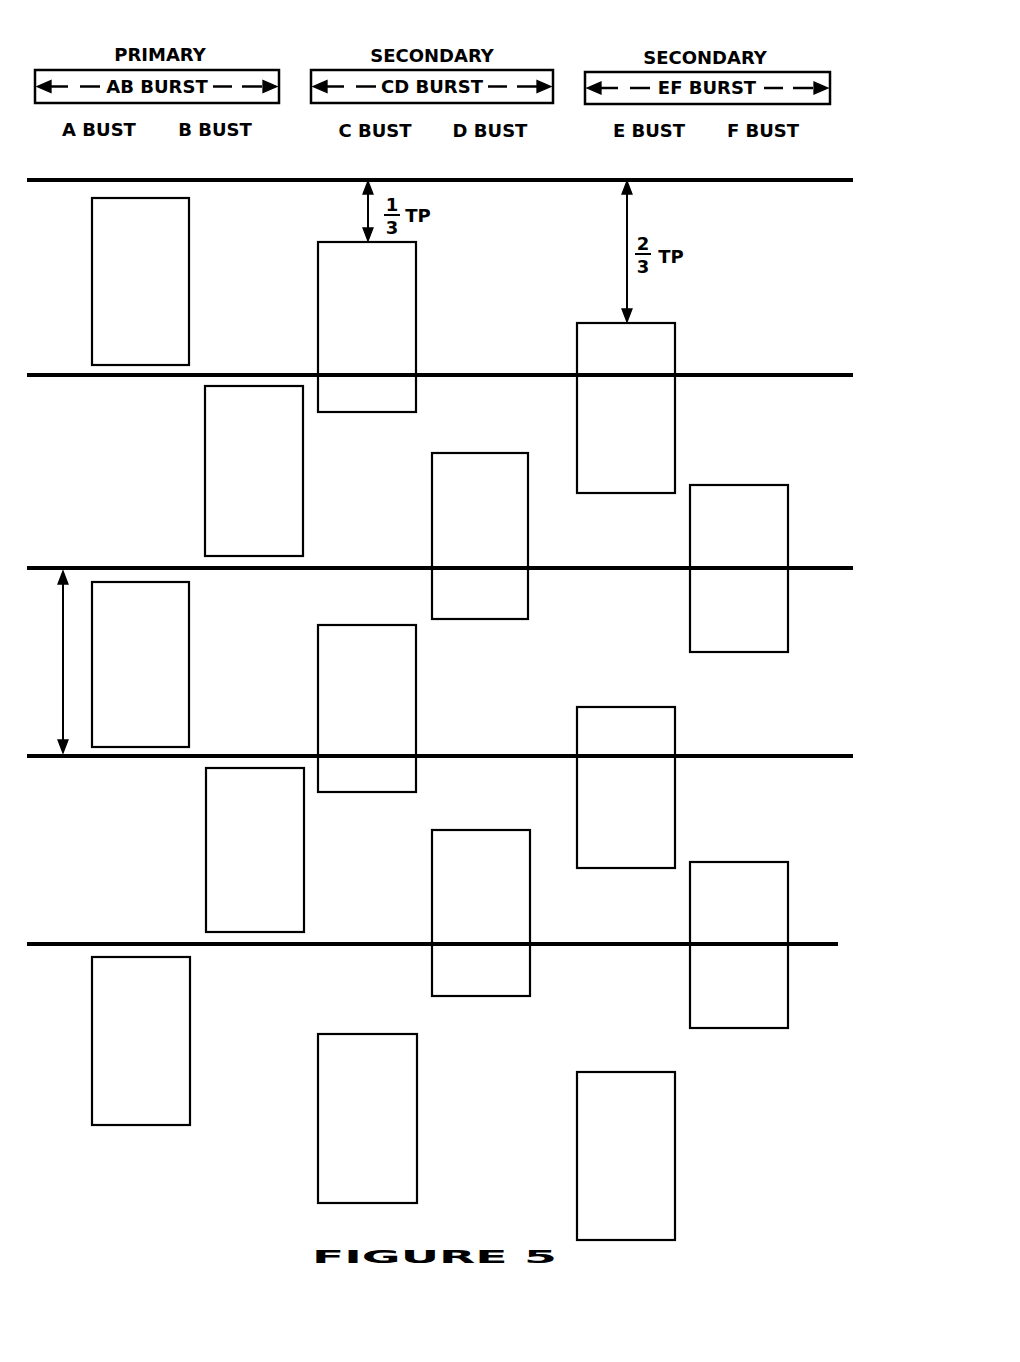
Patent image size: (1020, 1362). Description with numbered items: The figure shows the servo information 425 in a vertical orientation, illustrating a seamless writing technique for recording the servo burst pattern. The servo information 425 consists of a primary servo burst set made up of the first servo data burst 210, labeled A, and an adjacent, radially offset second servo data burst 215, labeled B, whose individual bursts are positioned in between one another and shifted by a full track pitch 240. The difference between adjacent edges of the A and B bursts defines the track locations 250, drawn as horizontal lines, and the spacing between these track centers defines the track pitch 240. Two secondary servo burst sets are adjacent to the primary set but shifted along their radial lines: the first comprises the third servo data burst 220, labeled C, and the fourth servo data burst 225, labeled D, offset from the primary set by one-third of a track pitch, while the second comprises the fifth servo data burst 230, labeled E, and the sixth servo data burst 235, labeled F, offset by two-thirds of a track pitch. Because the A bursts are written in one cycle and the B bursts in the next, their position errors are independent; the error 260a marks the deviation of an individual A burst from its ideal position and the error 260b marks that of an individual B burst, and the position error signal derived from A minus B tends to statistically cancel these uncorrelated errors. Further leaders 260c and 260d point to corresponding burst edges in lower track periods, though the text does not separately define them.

The servo information 425 is at (89, 29).
The first servo data burst 210 is at (122, 255).
The second servo data burst 215 is at (236, 440).
The third servo data burst 220 is at (349, 297).
The fourth servo data burst 225 is at (462, 545).
The fifth servo data burst 230 is at (608, 443).
The sixth servo data burst 235 is at (721, 538).
The track pitch 240 is at (45, 662).
The track locations 250 is at (440, 549).
The position error of burst A 260a is at (199, 194).
The position error of burst B 260b is at (197, 388).
The burst offset gap 260c is at (205, 580).
The burst offset gap 260d is at (194, 771).